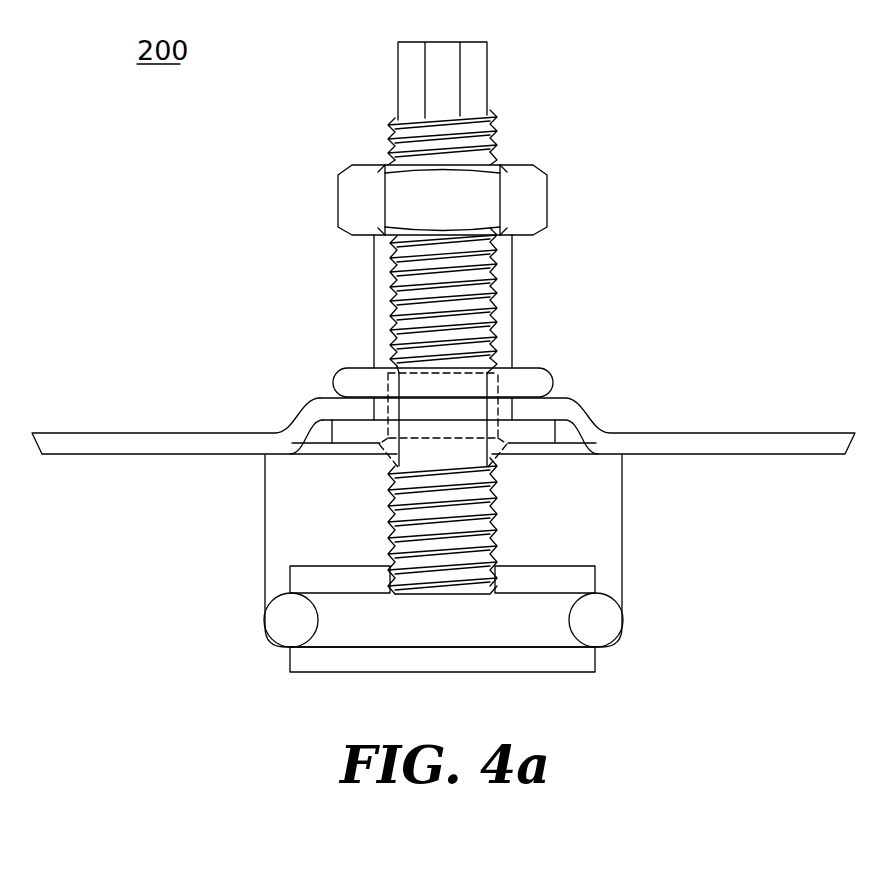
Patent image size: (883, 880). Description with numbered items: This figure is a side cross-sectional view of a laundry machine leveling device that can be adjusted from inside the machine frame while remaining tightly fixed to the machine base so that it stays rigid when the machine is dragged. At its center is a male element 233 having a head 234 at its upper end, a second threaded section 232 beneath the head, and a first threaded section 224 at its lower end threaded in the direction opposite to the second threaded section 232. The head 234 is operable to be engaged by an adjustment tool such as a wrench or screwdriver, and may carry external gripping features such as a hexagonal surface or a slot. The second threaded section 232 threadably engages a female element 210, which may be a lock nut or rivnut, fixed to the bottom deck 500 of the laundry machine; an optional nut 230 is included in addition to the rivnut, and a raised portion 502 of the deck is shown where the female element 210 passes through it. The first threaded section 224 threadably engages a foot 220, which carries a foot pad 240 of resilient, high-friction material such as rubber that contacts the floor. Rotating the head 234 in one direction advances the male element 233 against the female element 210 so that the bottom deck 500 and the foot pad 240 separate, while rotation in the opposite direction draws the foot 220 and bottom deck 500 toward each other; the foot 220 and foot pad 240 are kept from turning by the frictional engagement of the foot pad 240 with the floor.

The head 234 is at (492, 76).
The nut 230 is at (550, 200).
The second threaded section 232 is at (502, 286).
The female element 210 is at (372, 331).
The male element 233 is at (465, 393).
The raised portion of panel 502 is at (594, 406).
The bottom deck 500 is at (197, 431).
The foot 220 is at (263, 527).
The first threaded section 224 is at (501, 498).
The foot pad 240 is at (288, 664).